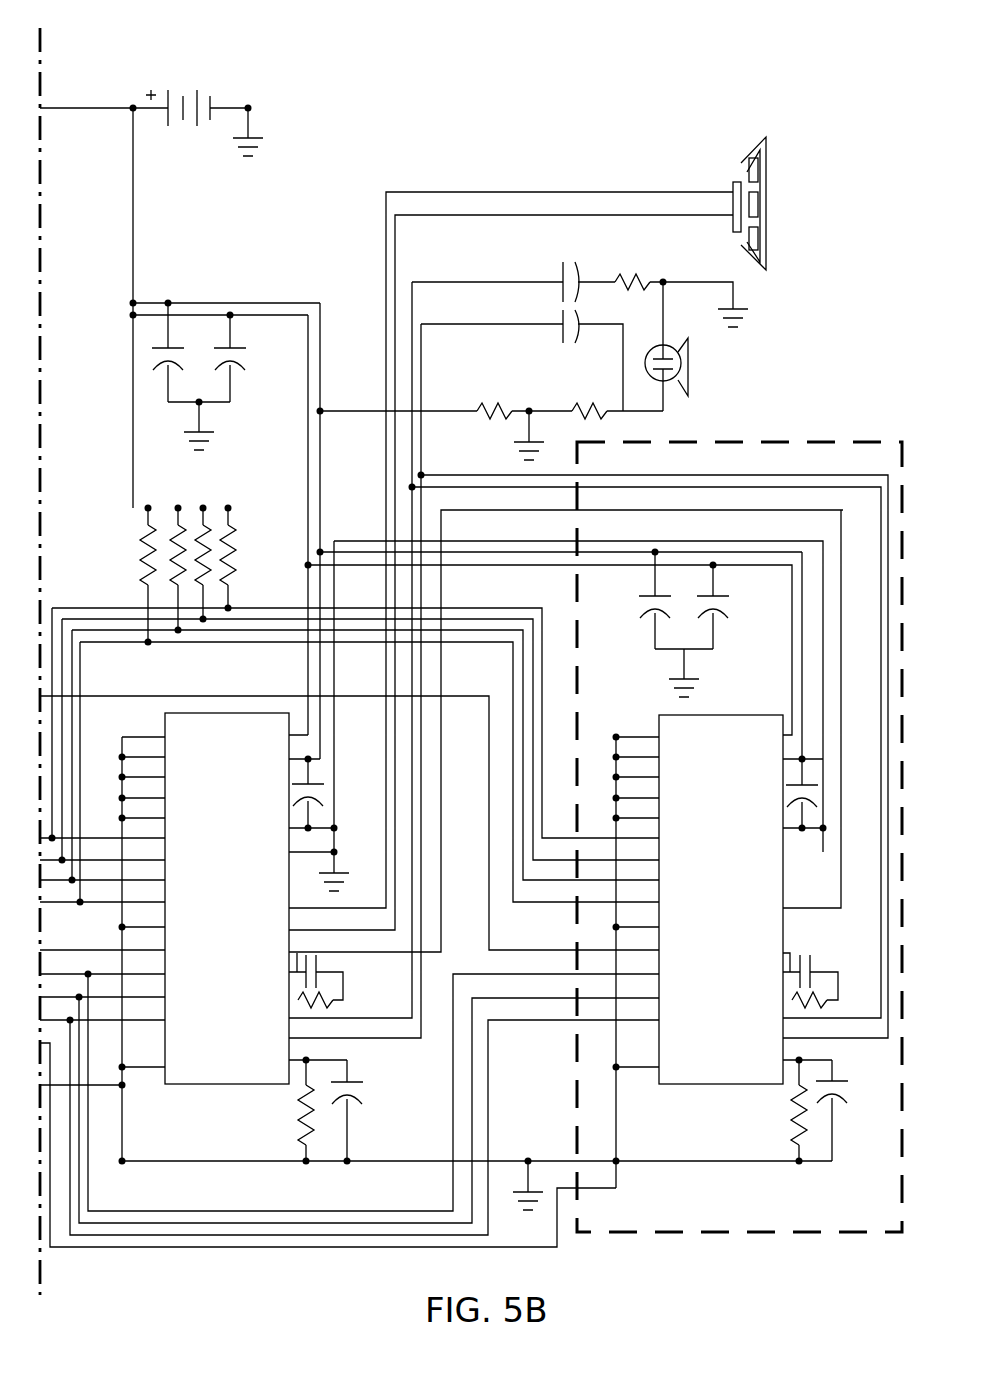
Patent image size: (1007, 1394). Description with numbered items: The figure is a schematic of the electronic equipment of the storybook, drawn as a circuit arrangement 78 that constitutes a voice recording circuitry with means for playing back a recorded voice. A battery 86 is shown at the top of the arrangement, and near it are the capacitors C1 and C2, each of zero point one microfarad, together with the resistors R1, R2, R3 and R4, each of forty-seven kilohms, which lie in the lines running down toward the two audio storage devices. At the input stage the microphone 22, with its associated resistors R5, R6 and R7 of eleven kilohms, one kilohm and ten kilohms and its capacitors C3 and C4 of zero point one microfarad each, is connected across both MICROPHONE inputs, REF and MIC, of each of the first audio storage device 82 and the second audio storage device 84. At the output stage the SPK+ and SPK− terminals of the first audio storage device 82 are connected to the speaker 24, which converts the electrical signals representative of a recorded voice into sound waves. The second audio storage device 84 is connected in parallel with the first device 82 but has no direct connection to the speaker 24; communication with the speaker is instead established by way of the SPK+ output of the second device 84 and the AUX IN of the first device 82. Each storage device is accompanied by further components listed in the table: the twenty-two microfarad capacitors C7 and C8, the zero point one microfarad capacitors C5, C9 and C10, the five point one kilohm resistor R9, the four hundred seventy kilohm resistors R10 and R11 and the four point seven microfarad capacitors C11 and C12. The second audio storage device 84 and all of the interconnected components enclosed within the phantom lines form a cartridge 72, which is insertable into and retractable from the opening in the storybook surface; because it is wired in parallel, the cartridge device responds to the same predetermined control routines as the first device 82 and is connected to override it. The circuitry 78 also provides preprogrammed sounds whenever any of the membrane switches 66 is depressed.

The circuit arrangement 78 is at (486, 137).
The battery 86 is at (226, 83).
The speaker 24 is at (733, 184).
The microphone 22 is at (678, 384).
The cartridge 72 is at (738, 440).
The first audio storage device 82 is at (255, 713).
The second audio storage device 84 is at (748, 715).
The membrane switch 66 is at (726, 599).
The capacitor C1 is at (162, 346).
The capacitor C2 is at (238, 348).
The capacitor C3 is at (563, 276).
The capacitor C4 is at (563, 322).
The capacitor C5 is at (642, 599).
The capacitor C7 is at (318, 782).
The capacitor C8 is at (812, 784).
The capacitor C9 is at (354, 952).
The capacitor C10 is at (818, 968).
The capacitor C11 is at (352, 1082).
The capacitor C12 is at (842, 1082).
The resistor R1 is at (142, 550).
The resistor R2 is at (176, 538).
The resistor R3 is at (208, 538).
The resistor R4 is at (236, 528).
The resistor R5 is at (640, 283).
The resistor R6 is at (492, 408).
The resistor R7 is at (589, 408).
The resistor R9 is at (826, 1003).
The resistor R10 is at (298, 1104).
The resistor R11 is at (794, 1120).